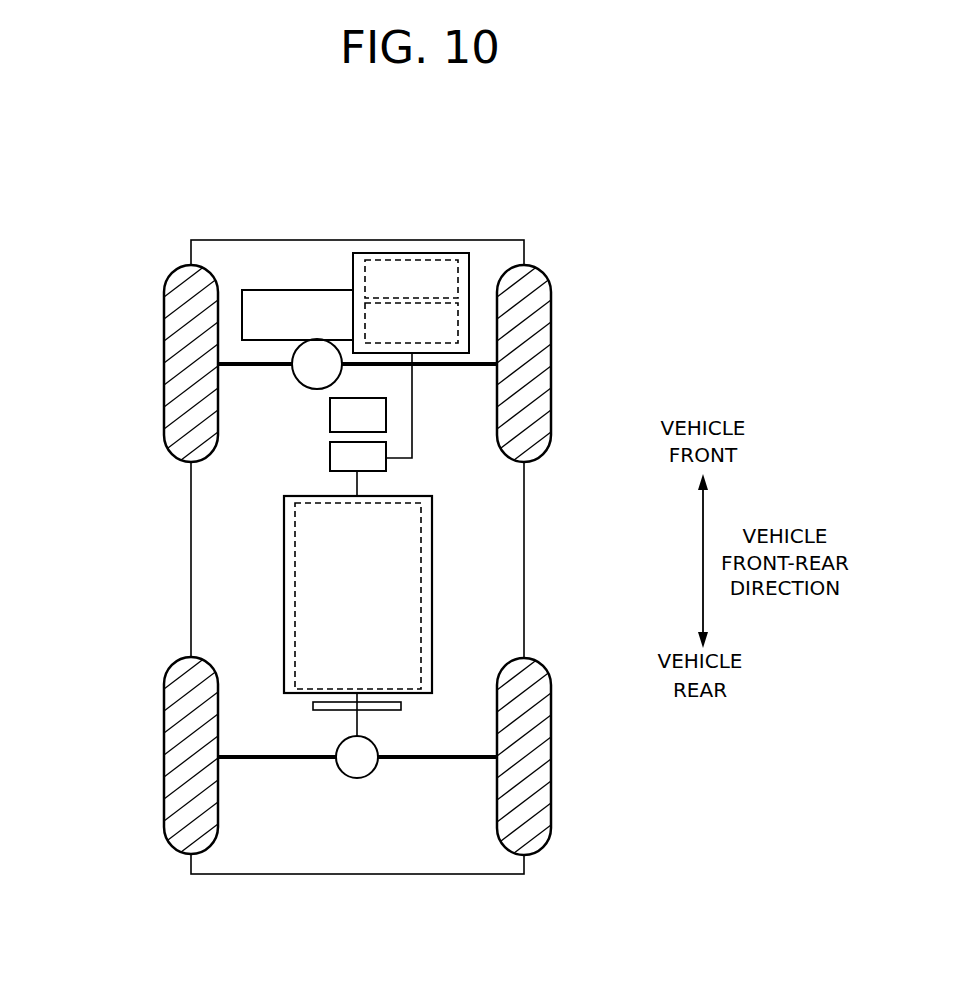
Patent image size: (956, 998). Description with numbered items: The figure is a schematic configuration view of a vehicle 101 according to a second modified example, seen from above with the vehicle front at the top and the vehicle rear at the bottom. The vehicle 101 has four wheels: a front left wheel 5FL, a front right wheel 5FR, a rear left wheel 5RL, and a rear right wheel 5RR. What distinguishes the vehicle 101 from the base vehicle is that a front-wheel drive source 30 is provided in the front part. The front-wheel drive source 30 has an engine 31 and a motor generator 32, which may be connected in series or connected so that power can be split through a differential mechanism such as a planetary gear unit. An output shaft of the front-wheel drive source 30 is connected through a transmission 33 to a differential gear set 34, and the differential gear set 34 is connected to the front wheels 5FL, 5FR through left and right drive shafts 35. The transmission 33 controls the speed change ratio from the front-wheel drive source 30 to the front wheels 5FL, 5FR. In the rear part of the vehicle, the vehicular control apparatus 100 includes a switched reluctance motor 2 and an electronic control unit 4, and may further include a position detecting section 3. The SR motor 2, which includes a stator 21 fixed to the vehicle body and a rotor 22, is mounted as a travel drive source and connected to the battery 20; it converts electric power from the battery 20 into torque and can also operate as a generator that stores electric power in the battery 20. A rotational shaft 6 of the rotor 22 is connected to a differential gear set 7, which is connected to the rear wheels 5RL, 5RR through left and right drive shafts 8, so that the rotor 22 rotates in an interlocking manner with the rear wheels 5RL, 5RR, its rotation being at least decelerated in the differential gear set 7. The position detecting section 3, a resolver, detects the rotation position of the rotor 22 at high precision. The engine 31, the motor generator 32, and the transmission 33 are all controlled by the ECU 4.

The vehicle 101 is at (354, 240).
The front-wheel drive source 30 is at (418, 253).
The engine 31 is at (460, 282).
The motor generator 32 is at (459, 326).
The transmission 33 is at (292, 289).
The differential gear set 34 is at (312, 391).
The drive shafts 35 is at (250, 367).
The battery 20 is at (330, 453).
The electronic control unit (ECU) 4 is at (386, 414).
The switched reluctance motor (SR motor) 2 is at (396, 594).
The stator 21 is at (284, 518).
The rotor 22 is at (296, 553).
The vehicular control apparatus 100 is at (573, 493).
The position detecting section 3 is at (401, 706).
The rotational shaft 6 is at (360, 727).
The differential gear set 7 is at (356, 779).
The drive shafts 8 is at (257, 753).
The front left wheel 5FL is at (164, 338).
The front right wheel 5FR is at (551, 331).
The rear left wheel 5RL is at (164, 776).
The rear right wheel 5RR is at (551, 774).